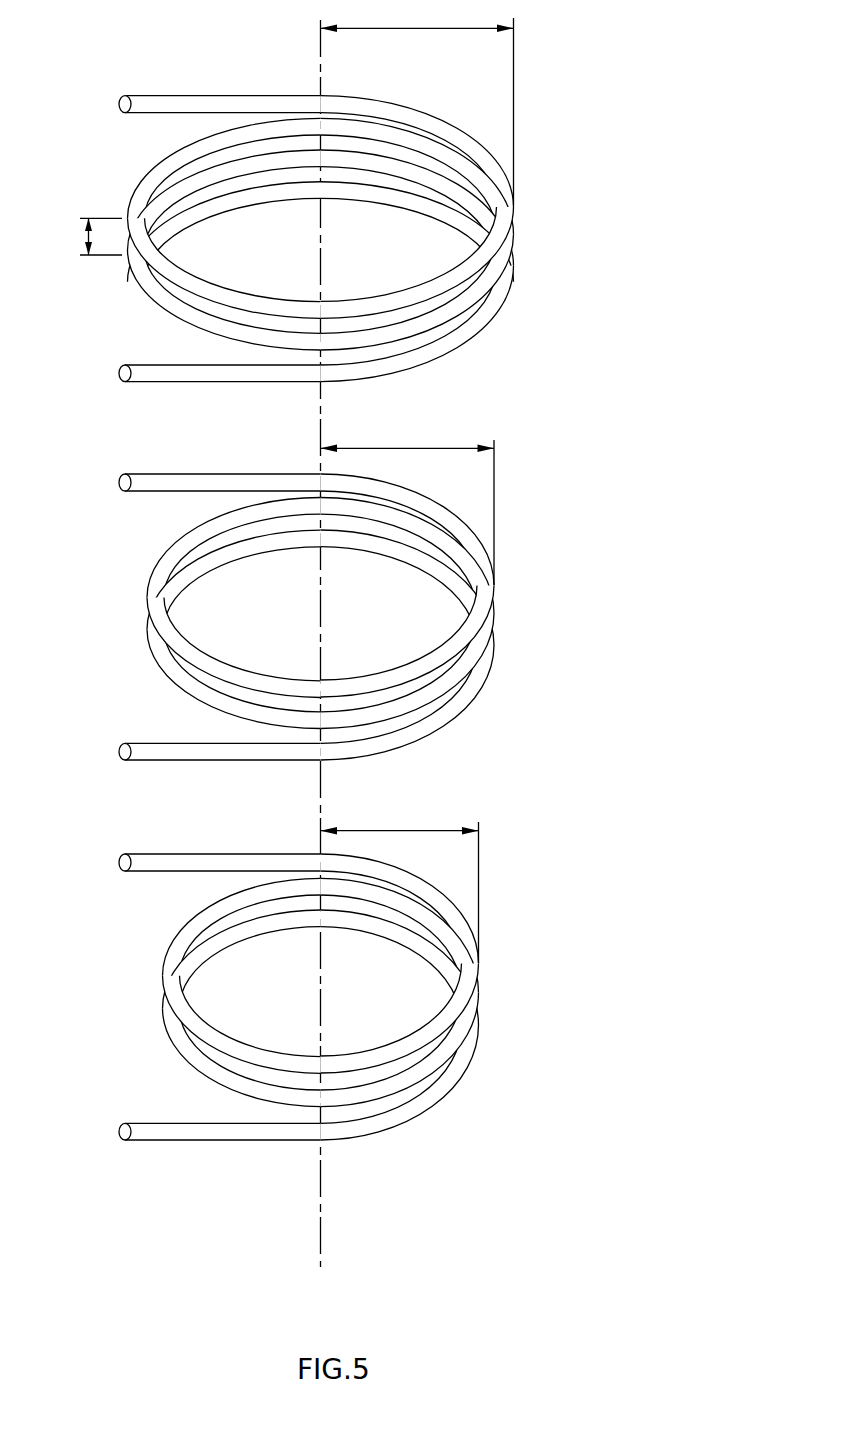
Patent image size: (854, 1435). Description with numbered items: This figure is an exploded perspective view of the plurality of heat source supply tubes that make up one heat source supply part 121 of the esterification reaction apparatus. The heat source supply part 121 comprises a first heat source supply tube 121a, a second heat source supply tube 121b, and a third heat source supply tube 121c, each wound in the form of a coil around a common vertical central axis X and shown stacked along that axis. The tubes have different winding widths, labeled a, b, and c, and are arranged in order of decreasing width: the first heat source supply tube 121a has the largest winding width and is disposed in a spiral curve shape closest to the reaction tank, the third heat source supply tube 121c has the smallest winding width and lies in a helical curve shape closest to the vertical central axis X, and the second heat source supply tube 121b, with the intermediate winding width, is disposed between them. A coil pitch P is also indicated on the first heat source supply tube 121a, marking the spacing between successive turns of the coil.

The heat source supply part 121 is at (403, 571).
The first heat source supply tube 121a is at (547, 237).
The second heat source supply tube 121b is at (547, 611).
The third heat source supply tube 121c is at (386, 973).
The vertical central axis X is at (322, 1202).